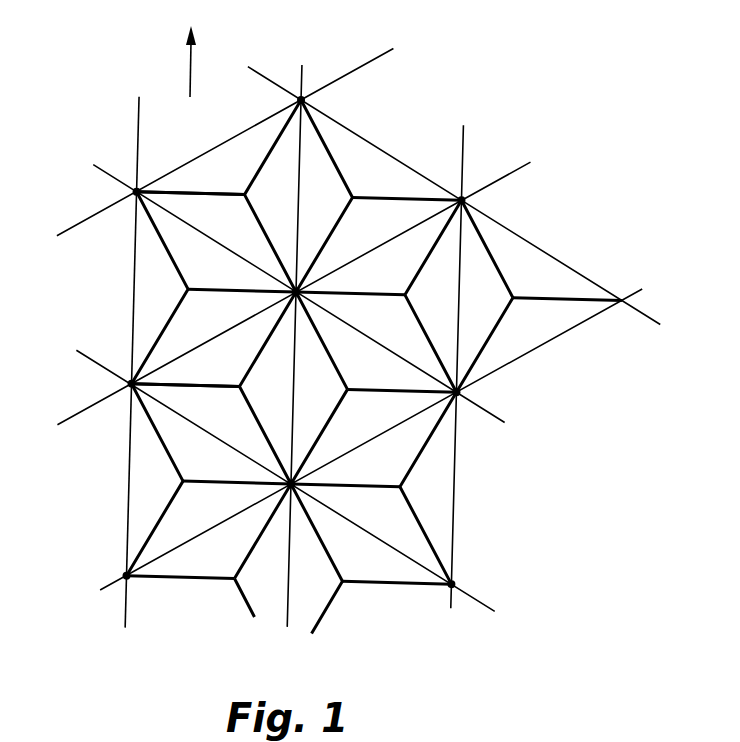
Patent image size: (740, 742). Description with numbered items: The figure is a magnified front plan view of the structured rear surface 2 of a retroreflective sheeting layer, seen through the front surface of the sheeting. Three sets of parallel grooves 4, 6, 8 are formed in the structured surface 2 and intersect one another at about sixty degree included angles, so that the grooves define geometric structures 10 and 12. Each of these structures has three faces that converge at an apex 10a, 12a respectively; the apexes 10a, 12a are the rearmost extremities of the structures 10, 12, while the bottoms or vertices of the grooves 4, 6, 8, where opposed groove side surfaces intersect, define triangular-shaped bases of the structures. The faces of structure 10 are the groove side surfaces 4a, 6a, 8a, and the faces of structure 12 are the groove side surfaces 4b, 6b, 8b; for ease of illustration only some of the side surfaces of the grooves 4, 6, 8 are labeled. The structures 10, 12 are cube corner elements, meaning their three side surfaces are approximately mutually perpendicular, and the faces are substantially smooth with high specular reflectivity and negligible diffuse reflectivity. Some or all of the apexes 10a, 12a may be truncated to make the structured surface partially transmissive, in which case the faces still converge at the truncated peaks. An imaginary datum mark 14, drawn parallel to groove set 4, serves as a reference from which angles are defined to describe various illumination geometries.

The structured rear surface 2 is at (531, 513).
The groove set 4 is at (135, 105).
The groove side surface 4a is at (326, 594).
The groove side surface 4b is at (281, 596).
The groove set 6 is at (647, 313).
The groove side surface 6a is at (376, 564).
The groove side surface 6b is at (401, 528).
The groove set 8 is at (73, 223).
The groove side surface 8a is at (207, 524).
The groove side surface 8b is at (227, 562).
The geometric structure 10 is at (137, 252).
The apex 10a is at (352, 180).
The geometric structure 12 is at (167, 180).
The apex 12a is at (246, 187).
The datum mark 14 is at (187, 77).